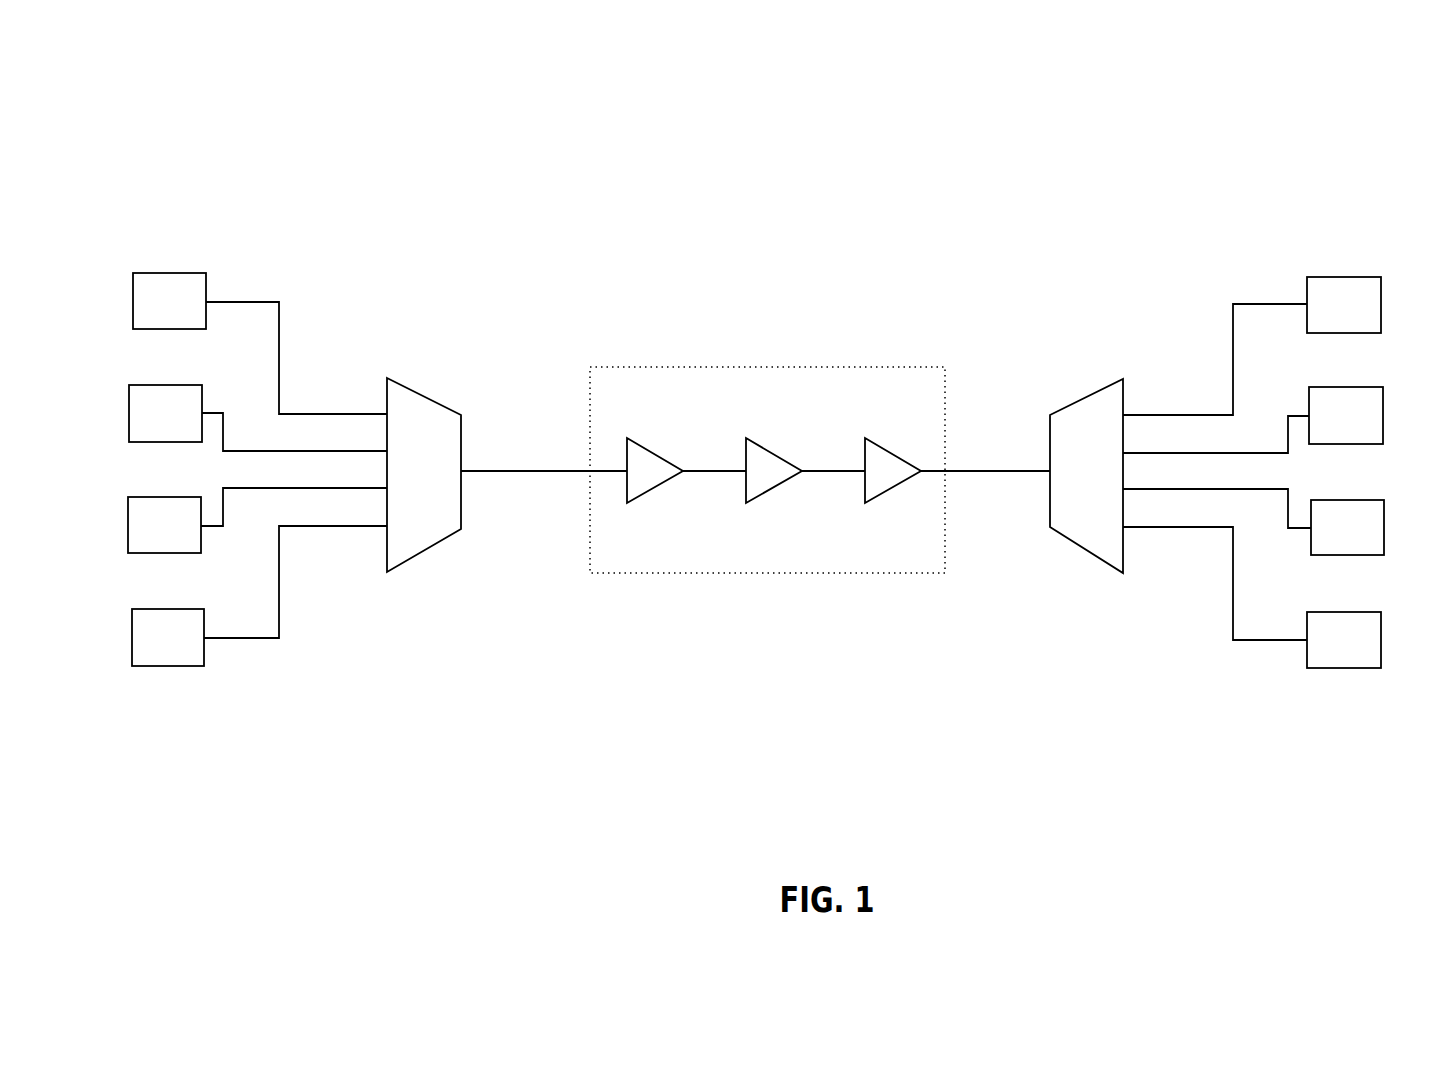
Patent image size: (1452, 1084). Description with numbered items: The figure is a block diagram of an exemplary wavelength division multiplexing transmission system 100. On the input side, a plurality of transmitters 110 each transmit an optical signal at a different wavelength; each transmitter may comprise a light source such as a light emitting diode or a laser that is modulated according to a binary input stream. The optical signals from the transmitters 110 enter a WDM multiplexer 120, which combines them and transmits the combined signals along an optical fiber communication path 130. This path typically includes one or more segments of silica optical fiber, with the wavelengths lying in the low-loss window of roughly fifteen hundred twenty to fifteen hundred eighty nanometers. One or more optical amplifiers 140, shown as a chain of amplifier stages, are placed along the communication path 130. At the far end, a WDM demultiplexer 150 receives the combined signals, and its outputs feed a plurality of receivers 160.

The WDM transmission system 100 is at (1266, 107).
The transmitters 110 is at (121, 341).
The WDM multiplexer 120 is at (418, 364).
The optical fiber communication path 130 is at (537, 470).
The optical amplifiers 140 is at (770, 366).
The WDM demultiplexer 150 is at (1087, 378).
The receivers 160 is at (1408, 343).